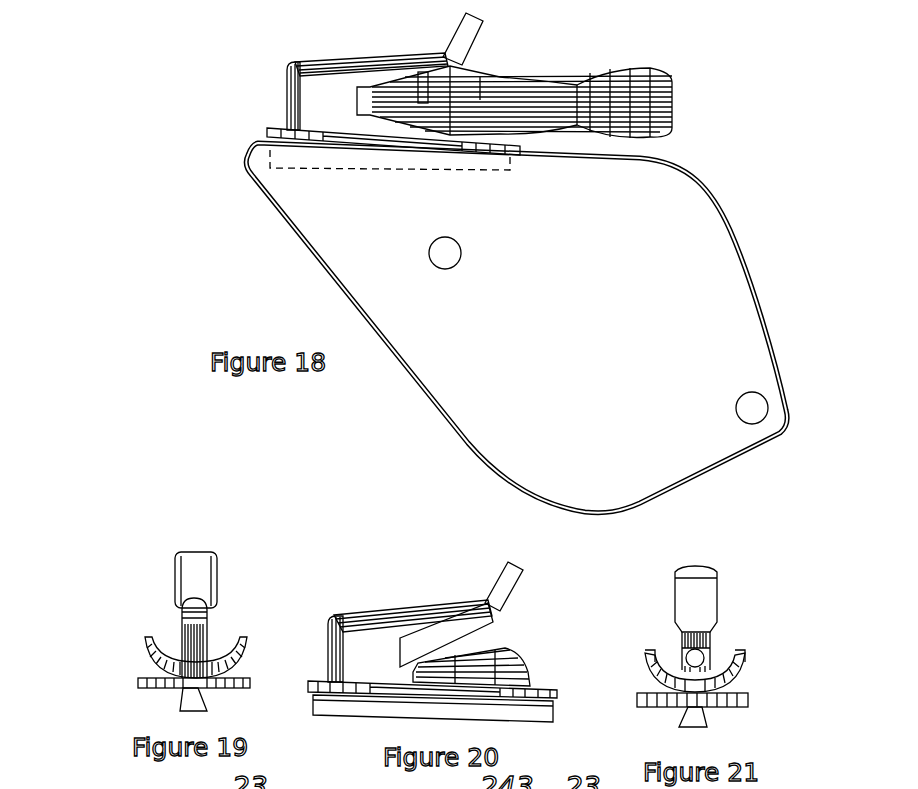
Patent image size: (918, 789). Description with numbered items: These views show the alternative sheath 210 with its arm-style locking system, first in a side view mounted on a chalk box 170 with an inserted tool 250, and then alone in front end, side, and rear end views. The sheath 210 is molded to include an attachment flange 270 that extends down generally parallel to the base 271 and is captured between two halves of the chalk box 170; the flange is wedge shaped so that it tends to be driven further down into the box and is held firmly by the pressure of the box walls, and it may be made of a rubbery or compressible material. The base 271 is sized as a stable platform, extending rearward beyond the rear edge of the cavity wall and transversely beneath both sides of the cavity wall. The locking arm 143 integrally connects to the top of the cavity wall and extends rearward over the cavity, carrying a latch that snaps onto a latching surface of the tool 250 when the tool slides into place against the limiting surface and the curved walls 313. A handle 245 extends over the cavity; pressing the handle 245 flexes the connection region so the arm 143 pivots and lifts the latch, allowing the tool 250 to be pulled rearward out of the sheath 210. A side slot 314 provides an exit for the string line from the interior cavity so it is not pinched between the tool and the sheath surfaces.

In FIG. 18, the chalk box 170 is at (690, 236).
In FIG. 18, the sheath 210 is at (263, 62).
In FIG. 20, the sheath 210 is at (465, 614).
In FIG. 18, the tool 250 is at (503, 58).
In FIG. 19, the handle 245 is at (193, 568).
In FIG. 19, the base 271 is at (140, 682).
In FIG. 20, the base 271 is at (551, 688).
In FIG. 19, the attachment flange 270 is at (179, 707).
In FIG. 20, the attachment flange 270 is at (530, 710).
In FIG. 20, the arm 143 is at (465, 598).
In FIG. 20, the side slot 314 is at (421, 651).
In FIG. 21, the curved walls 313 is at (708, 660).